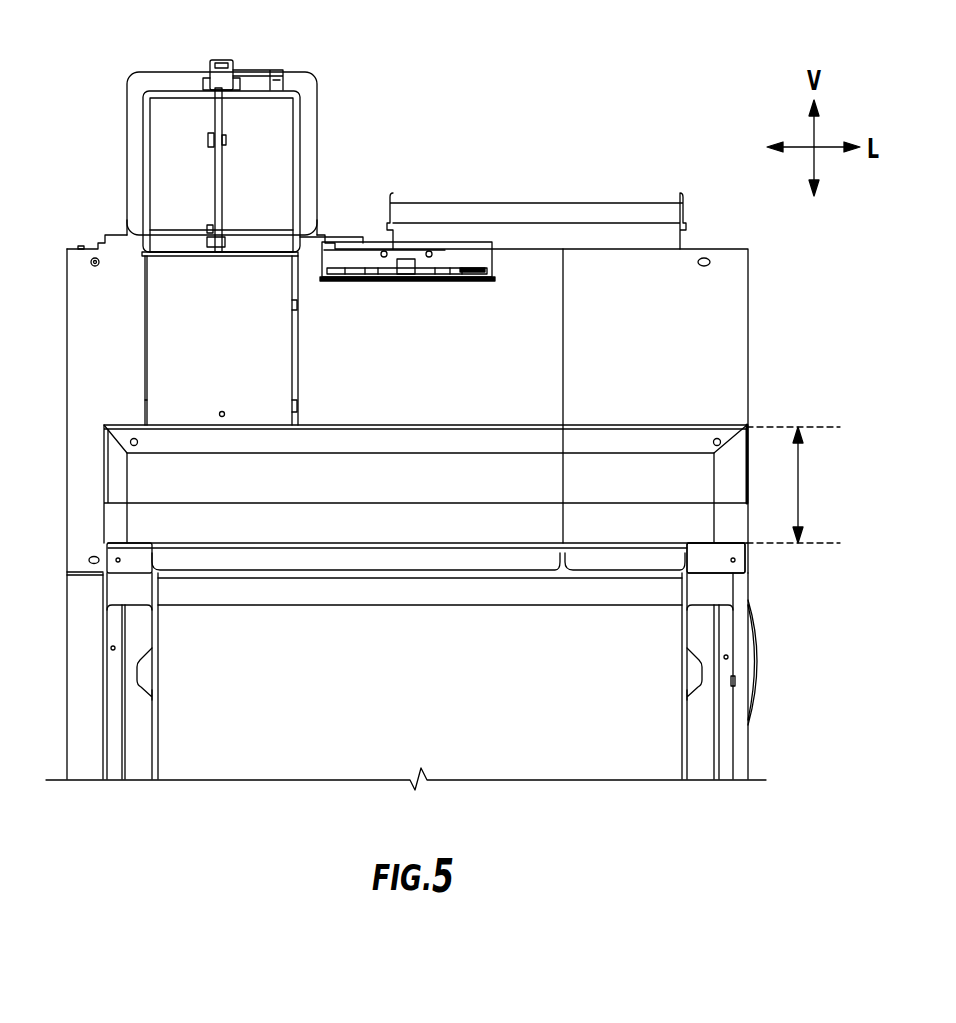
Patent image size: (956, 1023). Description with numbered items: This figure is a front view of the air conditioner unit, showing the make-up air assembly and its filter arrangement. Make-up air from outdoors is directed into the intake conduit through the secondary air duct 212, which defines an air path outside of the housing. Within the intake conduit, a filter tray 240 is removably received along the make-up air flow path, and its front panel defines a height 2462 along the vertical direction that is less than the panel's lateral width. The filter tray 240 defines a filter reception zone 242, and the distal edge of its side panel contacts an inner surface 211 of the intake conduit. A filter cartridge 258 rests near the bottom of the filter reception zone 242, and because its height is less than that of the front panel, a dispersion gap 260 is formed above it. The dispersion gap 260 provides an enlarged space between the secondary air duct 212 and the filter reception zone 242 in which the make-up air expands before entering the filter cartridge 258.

The inner surface 211 is at (552, 712).
The secondary air duct 212 is at (113, 133).
The filter cartridge 258 is at (375, 467).
The dispersion gap 260 is at (195, 467).
The filter reception zone 242 is at (303, 521).
The height 2462 is at (798, 497).
The filter tray 240 is at (760, 572).